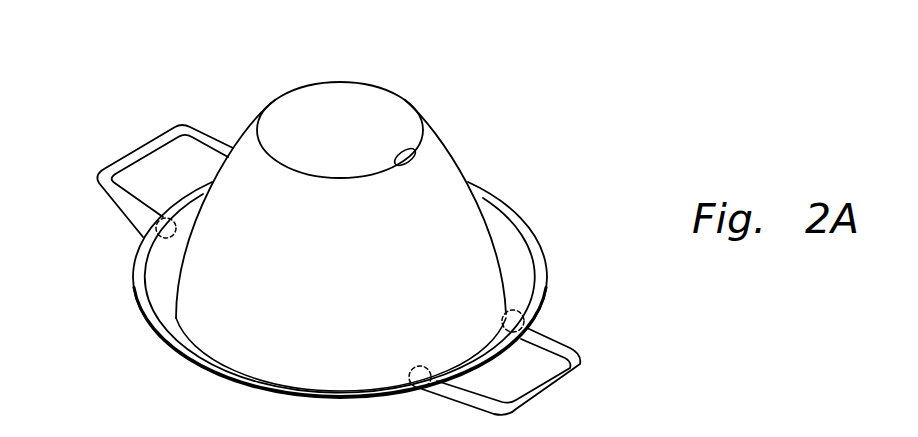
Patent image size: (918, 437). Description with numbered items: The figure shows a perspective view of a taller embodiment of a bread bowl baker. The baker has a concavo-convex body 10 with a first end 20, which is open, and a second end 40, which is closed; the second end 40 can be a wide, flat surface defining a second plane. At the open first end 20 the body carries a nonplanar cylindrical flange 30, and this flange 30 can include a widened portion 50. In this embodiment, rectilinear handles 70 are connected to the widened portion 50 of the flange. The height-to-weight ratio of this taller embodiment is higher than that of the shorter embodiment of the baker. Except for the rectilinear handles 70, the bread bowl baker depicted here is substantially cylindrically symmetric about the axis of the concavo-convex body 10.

The concavo-convex body 10 is at (440, 147).
The first end 20 is at (506, 318).
The nonplanar cylindrical flange 30 is at (162, 276).
The second end 40 is at (338, 118).
The widened portion 50 is at (513, 213).
The rectilinear handles 70 is at (136, 144).